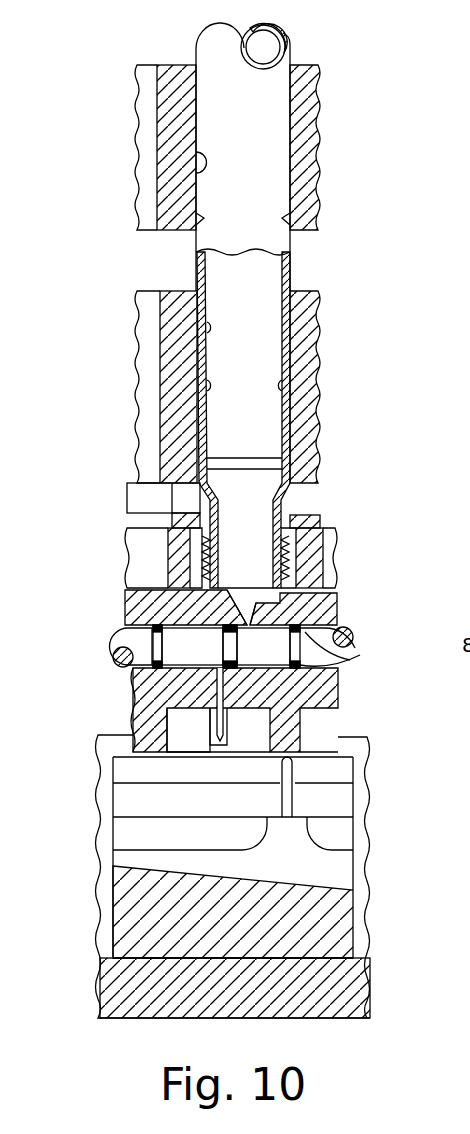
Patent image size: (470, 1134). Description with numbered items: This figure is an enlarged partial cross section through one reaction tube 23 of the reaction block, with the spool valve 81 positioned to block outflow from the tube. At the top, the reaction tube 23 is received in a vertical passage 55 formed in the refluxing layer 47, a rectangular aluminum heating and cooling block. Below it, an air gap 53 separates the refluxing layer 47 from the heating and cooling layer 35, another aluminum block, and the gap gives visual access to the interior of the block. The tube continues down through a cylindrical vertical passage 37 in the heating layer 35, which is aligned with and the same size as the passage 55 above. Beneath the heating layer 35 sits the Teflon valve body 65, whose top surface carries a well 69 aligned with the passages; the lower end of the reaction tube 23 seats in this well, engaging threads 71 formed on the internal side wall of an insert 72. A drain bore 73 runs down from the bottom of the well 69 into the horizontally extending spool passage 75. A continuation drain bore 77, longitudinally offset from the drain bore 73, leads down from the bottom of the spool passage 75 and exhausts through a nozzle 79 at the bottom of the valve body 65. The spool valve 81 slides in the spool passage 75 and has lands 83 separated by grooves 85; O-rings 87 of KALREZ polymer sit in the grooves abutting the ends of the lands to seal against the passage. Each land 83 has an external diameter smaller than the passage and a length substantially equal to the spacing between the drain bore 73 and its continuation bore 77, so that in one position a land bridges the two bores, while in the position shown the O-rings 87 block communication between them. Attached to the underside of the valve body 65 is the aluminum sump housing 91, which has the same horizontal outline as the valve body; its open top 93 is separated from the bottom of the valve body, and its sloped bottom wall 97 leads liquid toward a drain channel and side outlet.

The reaction tube 23 is at (258, 152).
The heating and cooling layer 35 is at (315, 392).
The vertical passage 37 is at (200, 383).
The refluxing layer 47 is at (305, 95).
The air gap 53 is at (175, 292).
The vertical passage 55 is at (195, 153).
The valve body 65 is at (108, 607).
The well 69 is at (296, 578).
The threads 71 is at (207, 553).
The insert 72 is at (200, 570).
The drain bore 73 is at (250, 612).
The spool passage 75 is at (352, 653).
The continuation drain bore 77 is at (307, 682).
The nozzle 79 is at (228, 730).
The spool valve 81 is at (85, 645).
The land 83 is at (263, 635).
The groove 85 is at (340, 660).
The O-ring 87 is at (128, 693).
The sump housing 91 is at (392, 923).
The open top 93 is at (195, 748).
The sloped bottom wall 97 is at (145, 868).